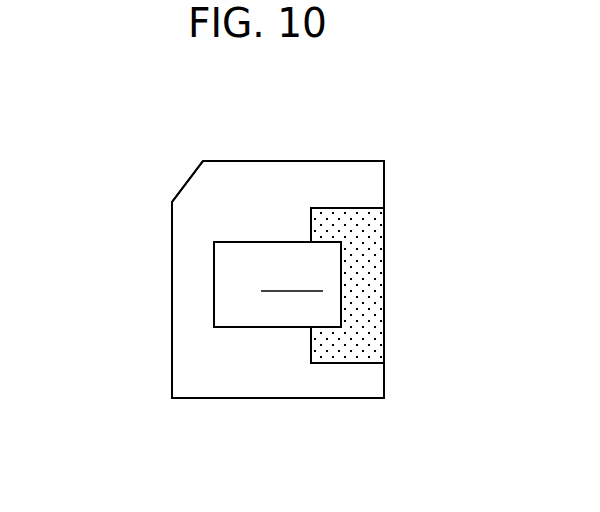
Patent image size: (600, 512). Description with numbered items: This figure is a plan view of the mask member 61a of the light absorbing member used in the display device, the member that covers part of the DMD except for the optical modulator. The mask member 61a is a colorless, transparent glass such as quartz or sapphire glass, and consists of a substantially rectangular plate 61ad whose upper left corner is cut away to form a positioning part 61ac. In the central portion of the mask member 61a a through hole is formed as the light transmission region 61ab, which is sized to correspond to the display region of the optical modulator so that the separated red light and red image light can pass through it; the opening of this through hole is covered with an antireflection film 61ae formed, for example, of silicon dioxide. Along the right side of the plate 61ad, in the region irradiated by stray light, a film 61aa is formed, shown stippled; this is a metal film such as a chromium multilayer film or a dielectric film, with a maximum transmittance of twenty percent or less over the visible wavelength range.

The mask member 61a is at (190, 273).
The film 61aa is at (370, 293).
The light transmission region 61ab is at (246, 303).
The positioning part 61ac is at (190, 183).
The plate 61ad is at (363, 191).
The antireflection film 61ae is at (277, 284).